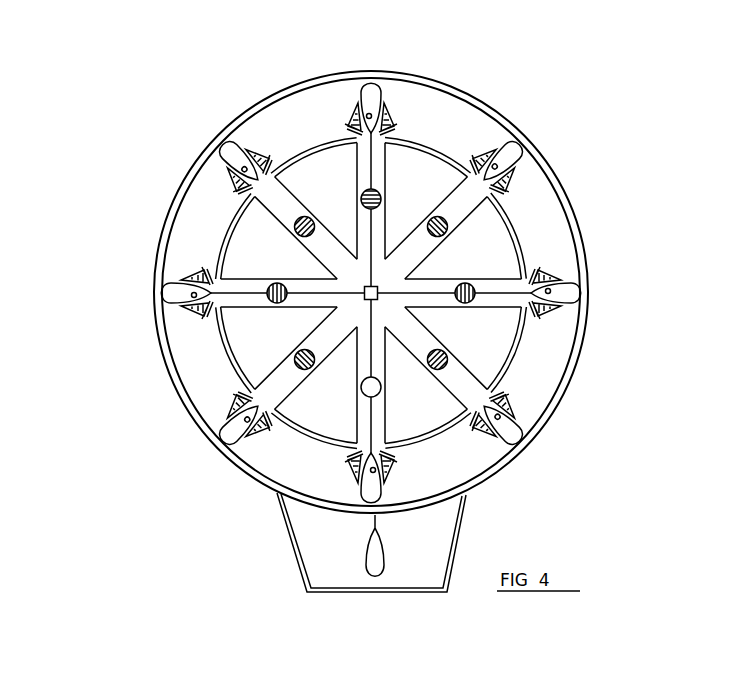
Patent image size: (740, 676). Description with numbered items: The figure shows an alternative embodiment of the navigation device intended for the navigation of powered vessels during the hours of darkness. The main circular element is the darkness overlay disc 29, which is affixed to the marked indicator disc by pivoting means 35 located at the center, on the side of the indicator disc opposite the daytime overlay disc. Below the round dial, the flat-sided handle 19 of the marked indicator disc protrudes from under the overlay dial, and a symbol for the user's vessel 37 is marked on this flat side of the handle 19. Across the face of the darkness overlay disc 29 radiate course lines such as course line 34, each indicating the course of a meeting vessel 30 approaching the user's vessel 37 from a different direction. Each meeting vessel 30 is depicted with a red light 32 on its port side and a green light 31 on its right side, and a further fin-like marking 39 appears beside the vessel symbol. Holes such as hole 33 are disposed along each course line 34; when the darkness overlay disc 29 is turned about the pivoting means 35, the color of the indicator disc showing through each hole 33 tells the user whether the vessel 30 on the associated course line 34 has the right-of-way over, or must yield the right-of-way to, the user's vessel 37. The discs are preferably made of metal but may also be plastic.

The handle 19 is at (316, 528).
The darkness overlay disc 29 is at (198, 368).
The meeting vessel 30 is at (600, 312).
The green light 31 is at (531, 286).
The red light 32 is at (557, 318).
The hole 33 is at (478, 283).
The course line 34 is at (497, 298).
The pivoting means 35 is at (378, 289).
The user's vessel 37 is at (377, 548).
The upper fin 39 is at (553, 277).